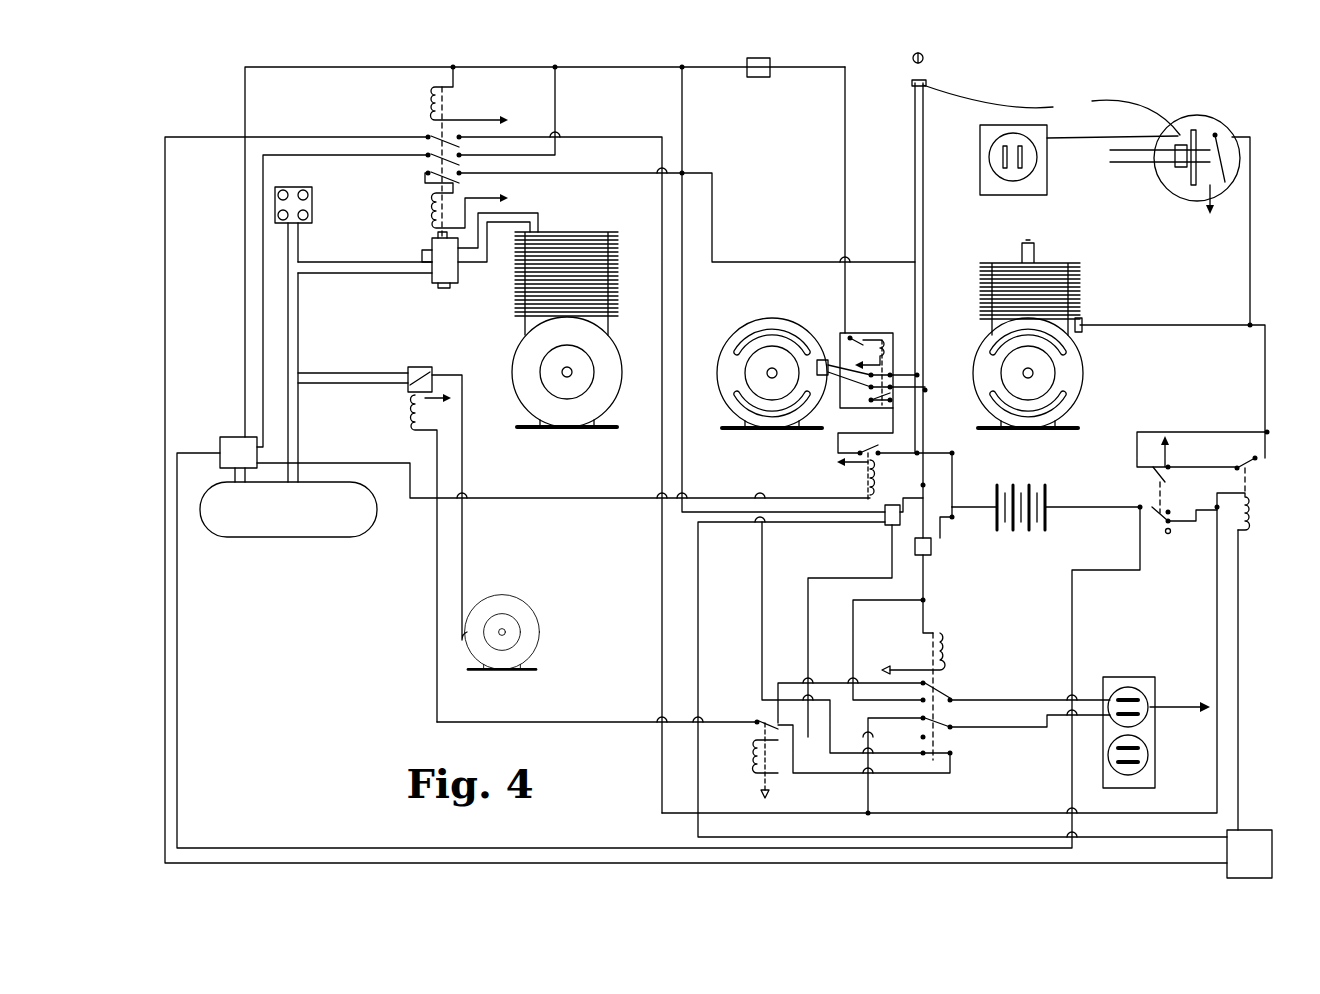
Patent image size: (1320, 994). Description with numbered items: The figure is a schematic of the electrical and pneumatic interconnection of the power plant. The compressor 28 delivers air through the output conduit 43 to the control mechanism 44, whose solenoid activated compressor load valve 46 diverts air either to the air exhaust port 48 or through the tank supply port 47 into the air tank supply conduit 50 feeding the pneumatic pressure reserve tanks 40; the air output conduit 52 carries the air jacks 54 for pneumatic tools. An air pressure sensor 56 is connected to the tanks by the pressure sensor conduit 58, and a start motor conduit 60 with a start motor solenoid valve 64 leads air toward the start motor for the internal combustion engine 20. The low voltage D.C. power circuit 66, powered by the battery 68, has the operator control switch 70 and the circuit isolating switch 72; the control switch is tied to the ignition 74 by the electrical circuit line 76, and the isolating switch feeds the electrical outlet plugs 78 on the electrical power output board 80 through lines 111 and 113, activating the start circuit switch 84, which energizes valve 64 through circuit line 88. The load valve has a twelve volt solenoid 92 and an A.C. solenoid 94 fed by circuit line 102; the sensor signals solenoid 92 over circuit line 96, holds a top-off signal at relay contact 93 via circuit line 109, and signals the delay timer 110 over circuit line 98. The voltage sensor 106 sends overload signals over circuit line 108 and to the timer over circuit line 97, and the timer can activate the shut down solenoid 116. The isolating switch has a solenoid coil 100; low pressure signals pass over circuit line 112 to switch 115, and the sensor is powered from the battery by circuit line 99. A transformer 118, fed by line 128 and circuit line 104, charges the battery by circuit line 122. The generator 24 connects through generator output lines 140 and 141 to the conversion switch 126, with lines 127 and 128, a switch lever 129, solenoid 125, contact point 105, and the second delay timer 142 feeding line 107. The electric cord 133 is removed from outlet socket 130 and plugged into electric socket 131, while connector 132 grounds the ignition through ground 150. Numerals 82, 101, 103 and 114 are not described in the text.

The internal combustion engine 20 is at (1085, 320).
The generator 24 is at (740, 352).
The compressor 28 is at (605, 360).
The pneumatic pressure reserve tanks 40 is at (345, 520).
The output conduit 43 is at (520, 215).
The control mechanism 44 is at (425, 238).
The compressor load valve 46 is at (445, 285).
The tank supply port 47 is at (427, 272).
The air exhaust port 48 is at (420, 250).
The air tank supply conduit 50 is at (290, 440).
The air output conduit 52 is at (308, 214).
The air jacks 54 is at (288, 190).
The air pressure sensor 56 is at (235, 437).
The pressure sensor conduit 58 is at (220, 466).
The start motor conduit 60 is at (392, 375).
The start motor solenoid valve 64 is at (415, 432).
The low voltage D.C. power circuit 66 is at (1115, 500).
The battery 68 is at (1010, 485).
The operator control switch 70 is at (1150, 470).
The circuit isolating switch 72 is at (940, 690).
The ignition 74 is at (1075, 305).
The electrical circuit line 76 is at (1255, 290).
The electrical outlet plugs 78 is at (1125, 690).
The electrical power output board 80 is at (1128, 788).
The fan motor 82 is at (540, 625).
The start circuit switch 84 is at (755, 755).
The circuit line 88 is at (610, 722).
The 12 volt D.C. solenoid 92 is at (440, 92).
The relay contact 93 is at (432, 130).
The 110 volt A.C. solenoid 94 is at (432, 212).
The circuit line 96 is at (645, 67).
The circuit line 97 is at (662, 630).
The circuit line 98 is at (165, 290).
The circuit line 99 is at (1072, 600).
The solenoid coil 100 is at (948, 630).
The conductor 101 is at (838, 445).
The circuit line 102 is at (640, 175).
The motor terminal 103 is at (1000, 465).
The circuit line 104 is at (1055, 545).
The contact point 105 is at (870, 408).
The voltage sensor 106 is at (885, 522).
The line 107 is at (845, 190).
The circuit line 108 is at (662, 435).
The circuit line 109 is at (555, 125).
The delay timer 110 is at (1272, 850).
The electrical circuit line 111 is at (662, 700).
The circuit line 112 is at (620, 505).
The electrical circuit line 113 is at (866, 795).
The conductor 114 is at (1240, 665).
The switch 115 is at (860, 490).
The shut down solenoid 116 is at (1240, 523).
The transformer 118 is at (928, 557).
The circuit line 122 is at (1010, 527).
The solenoid 125 is at (915, 340).
The conversion switch 126 is at (893, 372).
The line 127 is at (913, 210).
The line 128 is at (928, 210).
The switch lever 129 is at (855, 333).
The outlet socket 130 is at (1195, 130).
The electric socket 131 is at (923, 58).
The connector 132 is at (1235, 170).
The electric cord 133 is at (1051, 110).
The generator output line 140 is at (825, 333).
The generator output line 141 is at (845, 330).
The second delay timer 142 is at (760, 58).
The ground 150 is at (1210, 190).